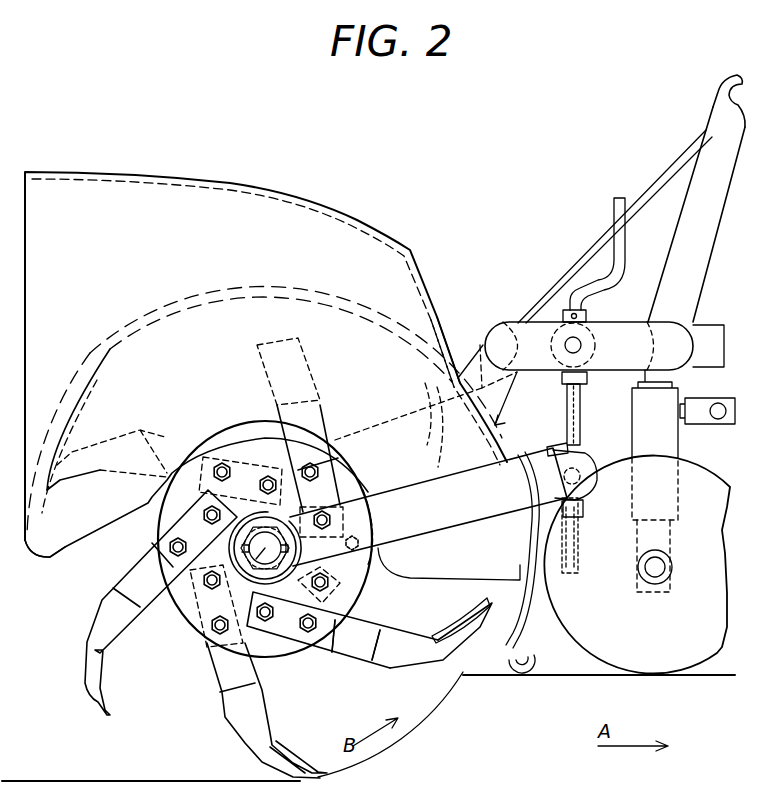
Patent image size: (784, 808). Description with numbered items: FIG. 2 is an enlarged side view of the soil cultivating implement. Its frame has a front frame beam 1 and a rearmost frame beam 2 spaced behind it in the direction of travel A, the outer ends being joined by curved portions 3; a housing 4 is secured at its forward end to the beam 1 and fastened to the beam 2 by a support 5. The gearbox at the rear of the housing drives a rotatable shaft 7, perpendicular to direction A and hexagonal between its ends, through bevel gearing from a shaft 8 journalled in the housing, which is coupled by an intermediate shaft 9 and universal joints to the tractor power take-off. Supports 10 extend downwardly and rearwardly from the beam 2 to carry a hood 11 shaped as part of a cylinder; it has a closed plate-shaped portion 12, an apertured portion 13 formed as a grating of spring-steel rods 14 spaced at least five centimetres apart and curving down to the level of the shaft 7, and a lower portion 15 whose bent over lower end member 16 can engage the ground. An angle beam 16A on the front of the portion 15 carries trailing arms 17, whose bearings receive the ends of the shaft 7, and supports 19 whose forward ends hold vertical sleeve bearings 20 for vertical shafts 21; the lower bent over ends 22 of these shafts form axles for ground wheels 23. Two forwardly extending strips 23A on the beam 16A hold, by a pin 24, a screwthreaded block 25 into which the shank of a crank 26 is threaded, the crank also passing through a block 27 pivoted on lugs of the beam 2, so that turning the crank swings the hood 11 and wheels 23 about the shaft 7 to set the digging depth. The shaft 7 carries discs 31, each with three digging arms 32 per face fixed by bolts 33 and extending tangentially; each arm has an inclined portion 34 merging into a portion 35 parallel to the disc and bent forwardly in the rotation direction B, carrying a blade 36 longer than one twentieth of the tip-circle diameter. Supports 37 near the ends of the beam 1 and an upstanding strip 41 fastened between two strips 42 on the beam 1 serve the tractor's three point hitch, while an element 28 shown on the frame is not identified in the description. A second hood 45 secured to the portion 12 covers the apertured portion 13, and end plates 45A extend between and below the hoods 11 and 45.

The frame beam 1 is at (680, 322).
The frame beam 2 is at (518, 330).
The curved portions 3 is at (638, 320).
The housing 4 is at (413, 414).
The support 5 is at (477, 355).
The rotatable shaft 7 is at (236, 556).
The shaft 8 is at (698, 400).
The intermediate shaft 9 is at (700, 424).
The supports 10 is at (483, 343).
The hood 11 is at (519, 398).
The closed plate-shaped integral portion 12 is at (500, 433).
The apertured portion 13 is at (192, 296).
The rods 14 is at (101, 360).
The lower portion 15 is at (500, 640).
The bent over lower end member 16 is at (526, 678).
The angle beam 16A is at (515, 490).
The trailing arms 17 is at (432, 535).
The supports 19 is at (632, 446).
The vertical sleeve bearings 20 is at (690, 457).
The vertical shafts 21 is at (672, 548).
The lower bent over ends 22 is at (652, 585).
The ground wheels 23 is at (584, 655).
The forwardly extending strips 23A is at (598, 506).
The pin 24 is at (565, 478).
The screwthreaded block 25 is at (563, 442).
The crank 26 is at (626, 256).
The block 27 is at (590, 314).
The hole 28 is at (583, 346).
The discs 31 is at (358, 595).
The digging arms 32 is at (204, 678).
The bolts 33 is at (275, 670).
The portion 34 is at (334, 655).
The portion 35 is at (408, 666).
The blade 36 is at (464, 628).
The supports 37 is at (706, 325).
The upstanding strip 41 is at (674, 170).
The strips 42 is at (710, 104).
The second hood 45 is at (272, 190).
The end plates 45A is at (60, 552).